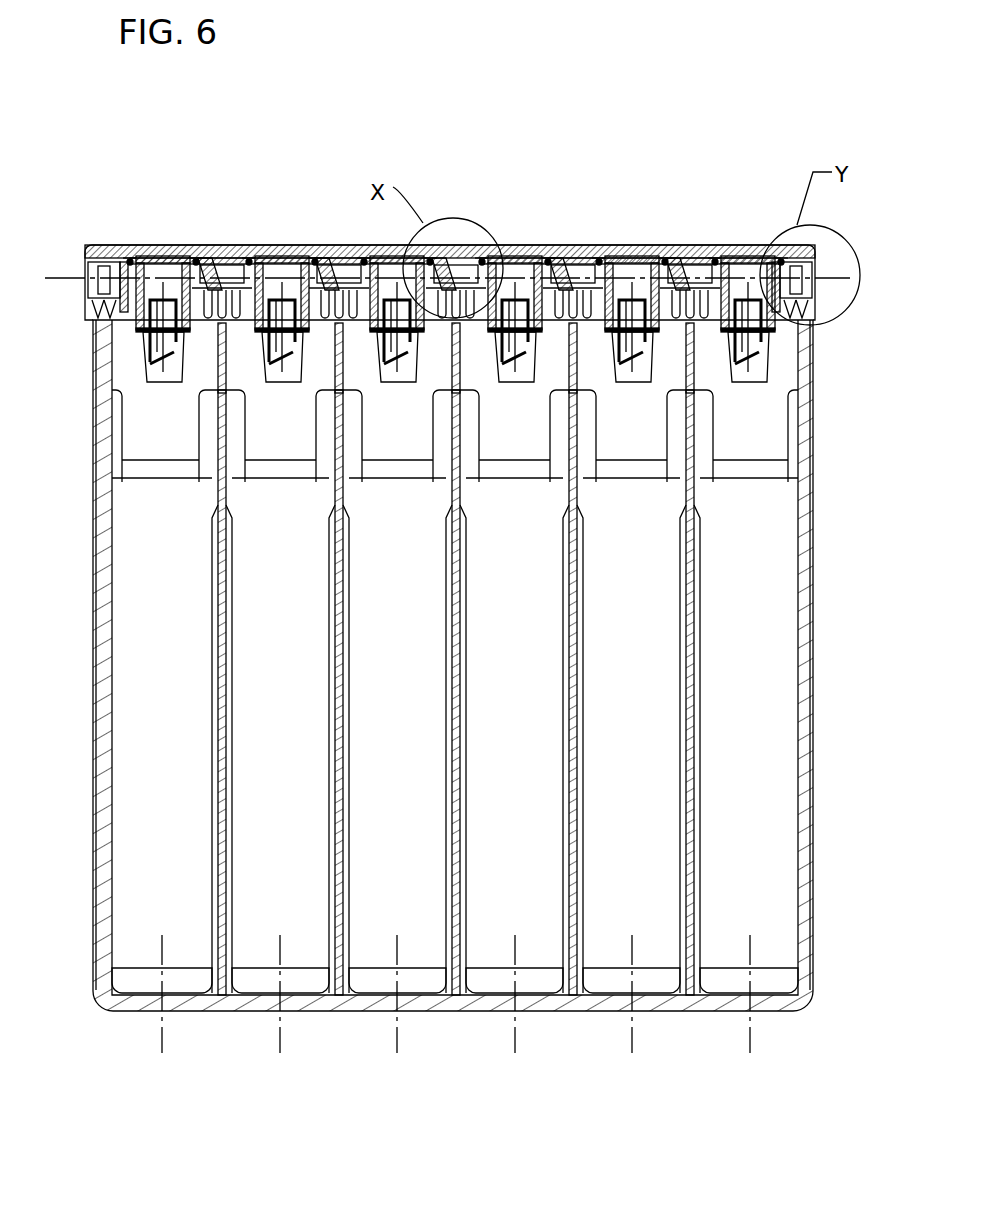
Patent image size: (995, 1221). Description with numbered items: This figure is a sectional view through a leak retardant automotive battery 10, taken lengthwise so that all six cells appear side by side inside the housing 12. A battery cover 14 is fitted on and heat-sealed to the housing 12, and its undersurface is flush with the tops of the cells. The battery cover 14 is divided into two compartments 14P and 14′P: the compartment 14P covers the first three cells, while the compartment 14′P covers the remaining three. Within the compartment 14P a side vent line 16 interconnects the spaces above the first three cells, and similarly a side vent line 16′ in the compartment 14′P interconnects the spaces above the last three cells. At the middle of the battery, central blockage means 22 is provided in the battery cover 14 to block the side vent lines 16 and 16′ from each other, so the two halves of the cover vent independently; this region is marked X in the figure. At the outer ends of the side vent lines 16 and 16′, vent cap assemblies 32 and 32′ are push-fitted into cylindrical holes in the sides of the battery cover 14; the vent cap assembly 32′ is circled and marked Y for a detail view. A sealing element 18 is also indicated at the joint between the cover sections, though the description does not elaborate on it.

The battery module 10 is at (542, 195).
The housing 12 is at (97, 680).
The battery cover 14 is at (87, 253).
The compartment 14P is at (263, 243).
The compartment 14′P is at (640, 240).
The side vent line 16 is at (338, 272).
The side vent line 16′ is at (570, 270).
The seal 18 is at (204, 255).
The central blockage means 22 is at (457, 270).
The vent cap assembly 32 is at (87, 290).
The vent cap assembly 32′ is at (815, 278).